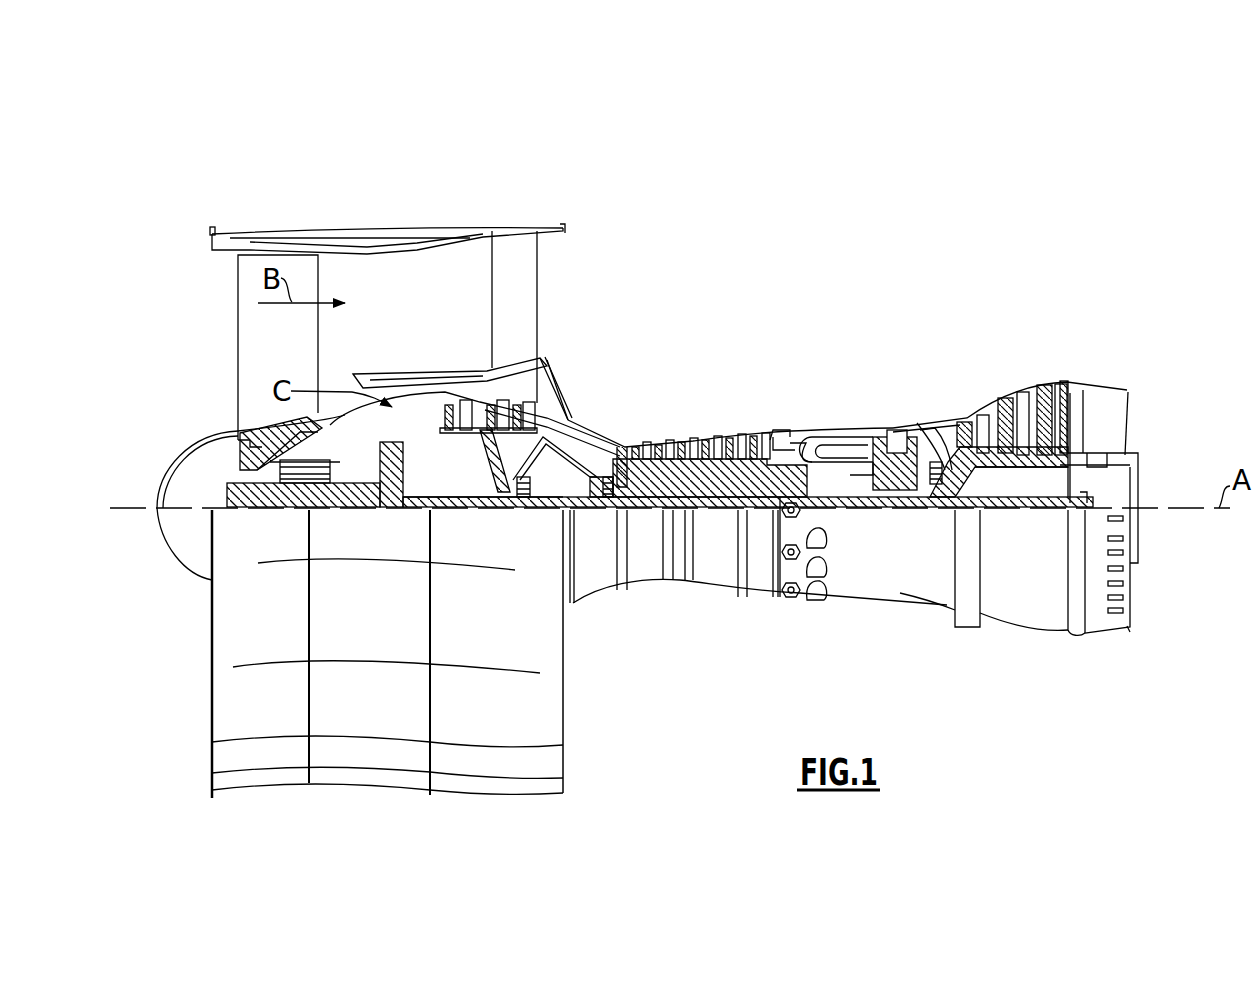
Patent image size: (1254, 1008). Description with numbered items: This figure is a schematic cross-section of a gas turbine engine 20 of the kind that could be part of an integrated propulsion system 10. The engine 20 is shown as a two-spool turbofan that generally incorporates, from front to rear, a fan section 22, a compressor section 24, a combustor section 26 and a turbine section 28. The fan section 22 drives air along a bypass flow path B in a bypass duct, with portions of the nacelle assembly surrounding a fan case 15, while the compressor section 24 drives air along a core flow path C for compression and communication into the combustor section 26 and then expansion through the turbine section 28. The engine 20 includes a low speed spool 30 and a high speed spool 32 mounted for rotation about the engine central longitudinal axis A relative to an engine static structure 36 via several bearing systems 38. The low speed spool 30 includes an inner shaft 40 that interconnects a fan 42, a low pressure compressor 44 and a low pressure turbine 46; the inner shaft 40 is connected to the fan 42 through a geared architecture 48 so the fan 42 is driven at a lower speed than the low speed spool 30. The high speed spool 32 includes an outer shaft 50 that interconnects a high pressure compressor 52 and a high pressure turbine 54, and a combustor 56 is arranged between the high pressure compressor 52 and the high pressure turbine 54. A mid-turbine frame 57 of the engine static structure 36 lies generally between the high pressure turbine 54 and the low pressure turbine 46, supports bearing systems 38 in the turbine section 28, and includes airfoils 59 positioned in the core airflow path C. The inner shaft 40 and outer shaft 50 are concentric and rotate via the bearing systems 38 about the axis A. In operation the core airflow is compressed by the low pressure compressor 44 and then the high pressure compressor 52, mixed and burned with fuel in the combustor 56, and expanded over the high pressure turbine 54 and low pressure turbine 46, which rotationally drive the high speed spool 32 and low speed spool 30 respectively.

The integrated propulsion system 10 is at (135, 86).
The fan case 15 is at (388, 238).
The gas turbine engine 20 is at (838, 282).
The fan section 22 is at (322, 226).
The compressor section 24 is at (613, 417).
The combustor section 26 is at (830, 410).
The turbine section 28 is at (972, 372).
The low speed spool 30 is at (718, 514).
The high speed spool 32 is at (760, 440).
The engine static structure 36 is at (757, 594).
The bearing systems 38 is at (527, 492).
The inner shaft 40 is at (585, 512).
The fan 42 is at (293, 357).
The low pressure compressor 44 is at (440, 438).
The low pressure turbine 46 is at (1017, 403).
The geared architecture 48 is at (393, 492).
The outer shaft 50 is at (822, 502).
The high pressure compressor 52 is at (690, 468).
The high pressure turbine 54 is at (893, 430).
The combustor 56 is at (830, 453).
The mid-turbine frame 57 is at (935, 418).
The airfoils 59 is at (962, 473).